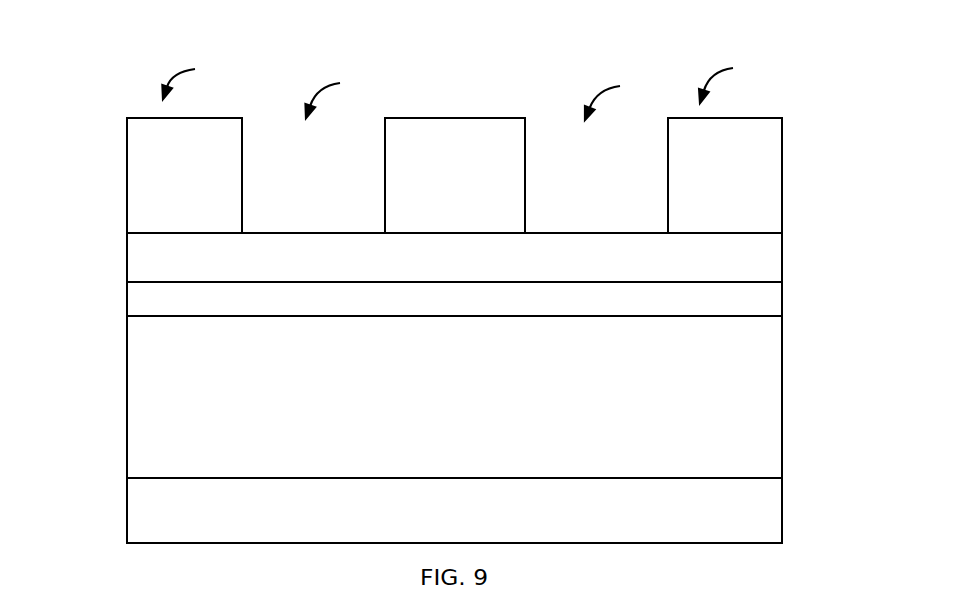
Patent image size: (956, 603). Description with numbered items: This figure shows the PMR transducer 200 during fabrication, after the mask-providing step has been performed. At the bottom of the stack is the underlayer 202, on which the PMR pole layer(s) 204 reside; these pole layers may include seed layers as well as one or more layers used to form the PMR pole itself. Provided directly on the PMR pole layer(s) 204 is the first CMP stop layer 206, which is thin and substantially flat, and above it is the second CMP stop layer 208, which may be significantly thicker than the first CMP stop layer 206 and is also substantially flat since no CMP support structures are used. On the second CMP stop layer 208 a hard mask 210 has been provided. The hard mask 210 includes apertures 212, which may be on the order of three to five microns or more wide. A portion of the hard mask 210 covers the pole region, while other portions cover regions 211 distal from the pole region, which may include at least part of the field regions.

The PMR transducer 200 is at (433, 47).
The underlayer 202 is at (782, 513).
The PMR pole layers 204 is at (782, 415).
The first CMP stop layer 206 is at (127, 300).
The second CMP stop layer 208 is at (782, 266).
The hard mask 210 is at (127, 183).
The regions distal from the pole region 211 is at (471, 80).
The apertures 212 is at (487, 97).